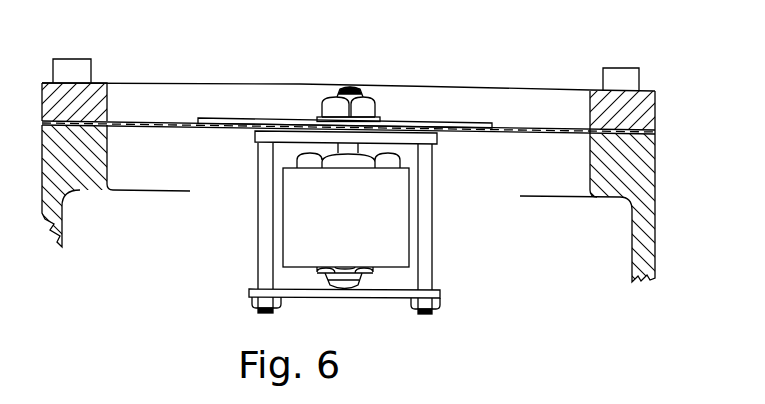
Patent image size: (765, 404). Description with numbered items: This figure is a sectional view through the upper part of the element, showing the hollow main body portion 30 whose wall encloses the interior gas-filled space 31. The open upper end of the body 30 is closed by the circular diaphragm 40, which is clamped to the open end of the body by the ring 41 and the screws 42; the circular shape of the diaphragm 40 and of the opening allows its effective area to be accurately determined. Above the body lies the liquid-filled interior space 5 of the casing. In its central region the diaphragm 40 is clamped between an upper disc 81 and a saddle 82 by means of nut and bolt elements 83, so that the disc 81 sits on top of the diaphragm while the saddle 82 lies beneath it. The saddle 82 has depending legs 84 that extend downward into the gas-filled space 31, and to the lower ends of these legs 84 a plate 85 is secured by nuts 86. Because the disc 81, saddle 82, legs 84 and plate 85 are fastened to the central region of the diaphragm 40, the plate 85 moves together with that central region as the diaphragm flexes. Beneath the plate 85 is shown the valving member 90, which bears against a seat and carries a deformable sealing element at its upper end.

The liquid-filled interior space 5 is at (320, 78).
The hollow main body portion 30 is at (55, 222).
The interior gas-filled space 31 is at (166, 240).
The diaphragm 40 is at (177, 123).
The ring 41 is at (102, 113).
The screws 42 is at (84, 73).
The upper disc 81 is at (443, 123).
The saddle 82 is at (434, 143).
The nut and bolt elements 83 is at (363, 106).
The depending legs 84 is at (425, 235).
The plate 85 is at (298, 288).
The nuts 86 is at (440, 303).
The valving member 90 is at (347, 289).